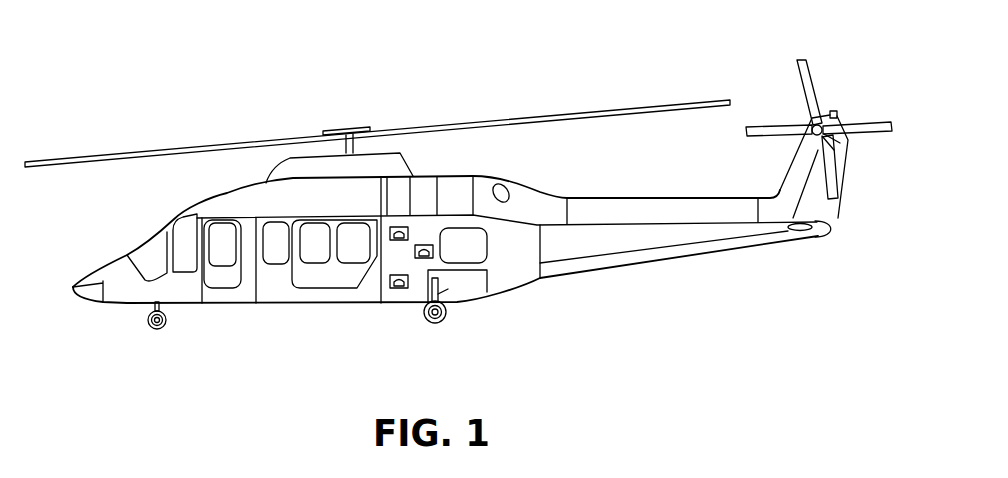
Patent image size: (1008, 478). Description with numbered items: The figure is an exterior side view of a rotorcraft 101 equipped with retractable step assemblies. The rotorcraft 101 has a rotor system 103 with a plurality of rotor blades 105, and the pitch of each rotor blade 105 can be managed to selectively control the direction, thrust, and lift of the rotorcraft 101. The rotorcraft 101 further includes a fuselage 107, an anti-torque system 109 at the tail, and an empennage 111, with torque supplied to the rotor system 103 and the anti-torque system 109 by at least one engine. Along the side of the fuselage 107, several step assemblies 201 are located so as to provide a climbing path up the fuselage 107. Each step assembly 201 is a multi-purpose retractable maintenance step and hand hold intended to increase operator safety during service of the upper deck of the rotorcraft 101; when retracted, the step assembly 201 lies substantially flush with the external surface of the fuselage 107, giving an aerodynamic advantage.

The rotorcraft 101 is at (229, 67).
The rotor system 103 is at (335, 127).
The rotor blade 105 is at (175, 147).
The fuselage 107 is at (277, 303).
The anti-torque system 109 is at (845, 95).
The empennage 111 is at (680, 259).
The step assembly 201 is at (399, 227).